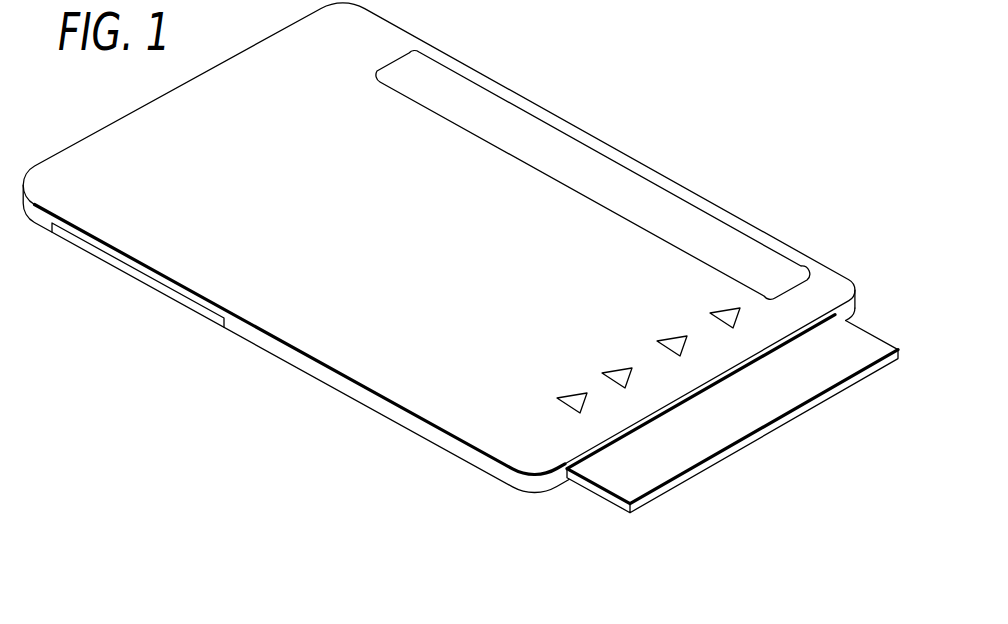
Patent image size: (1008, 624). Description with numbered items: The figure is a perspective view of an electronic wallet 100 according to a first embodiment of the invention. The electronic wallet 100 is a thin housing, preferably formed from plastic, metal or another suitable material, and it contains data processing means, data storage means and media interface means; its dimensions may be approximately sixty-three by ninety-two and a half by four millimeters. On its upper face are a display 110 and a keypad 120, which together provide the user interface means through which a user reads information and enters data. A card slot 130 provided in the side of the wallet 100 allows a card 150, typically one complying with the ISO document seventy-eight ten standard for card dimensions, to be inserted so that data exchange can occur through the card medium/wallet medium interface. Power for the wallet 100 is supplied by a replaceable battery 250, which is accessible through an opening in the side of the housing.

The electronic wallet 100 is at (435, 47).
The display 110 is at (507, 122).
The keypad 120 is at (553, 212).
The card slot 130 is at (848, 307).
The card 150 is at (728, 457).
The replaceable battery 250 is at (167, 293).